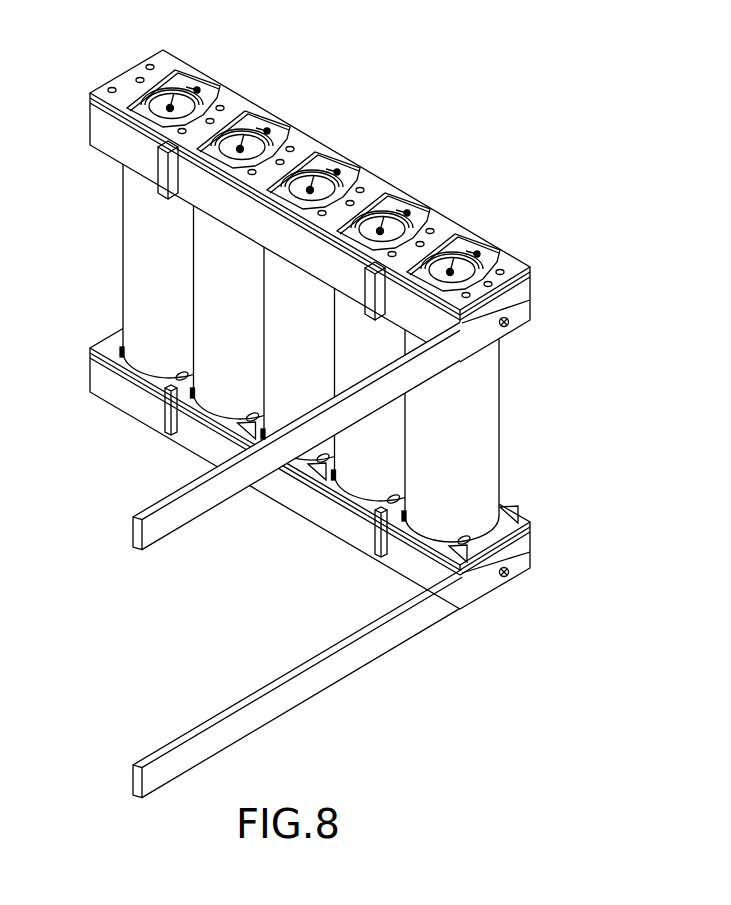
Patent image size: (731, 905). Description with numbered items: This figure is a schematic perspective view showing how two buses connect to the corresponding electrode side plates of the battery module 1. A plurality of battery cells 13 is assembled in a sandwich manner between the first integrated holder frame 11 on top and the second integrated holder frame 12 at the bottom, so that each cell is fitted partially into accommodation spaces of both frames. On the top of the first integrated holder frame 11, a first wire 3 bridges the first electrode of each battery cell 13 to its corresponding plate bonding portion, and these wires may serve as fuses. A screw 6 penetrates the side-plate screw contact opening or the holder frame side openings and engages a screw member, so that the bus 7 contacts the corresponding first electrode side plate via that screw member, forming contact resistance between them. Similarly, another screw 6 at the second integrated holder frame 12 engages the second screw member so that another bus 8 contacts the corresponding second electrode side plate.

The battery module 1 is at (393, 424).
The first wire 3 is at (386, 197).
The screw 6 is at (510, 326).
The bus 7 is at (133, 528).
The bus 8 is at (133, 775).
The first integrated holder frame 11 is at (331, 206).
The second integrated holder frame 12 is at (527, 511).
The battery cell 13 is at (507, 435).